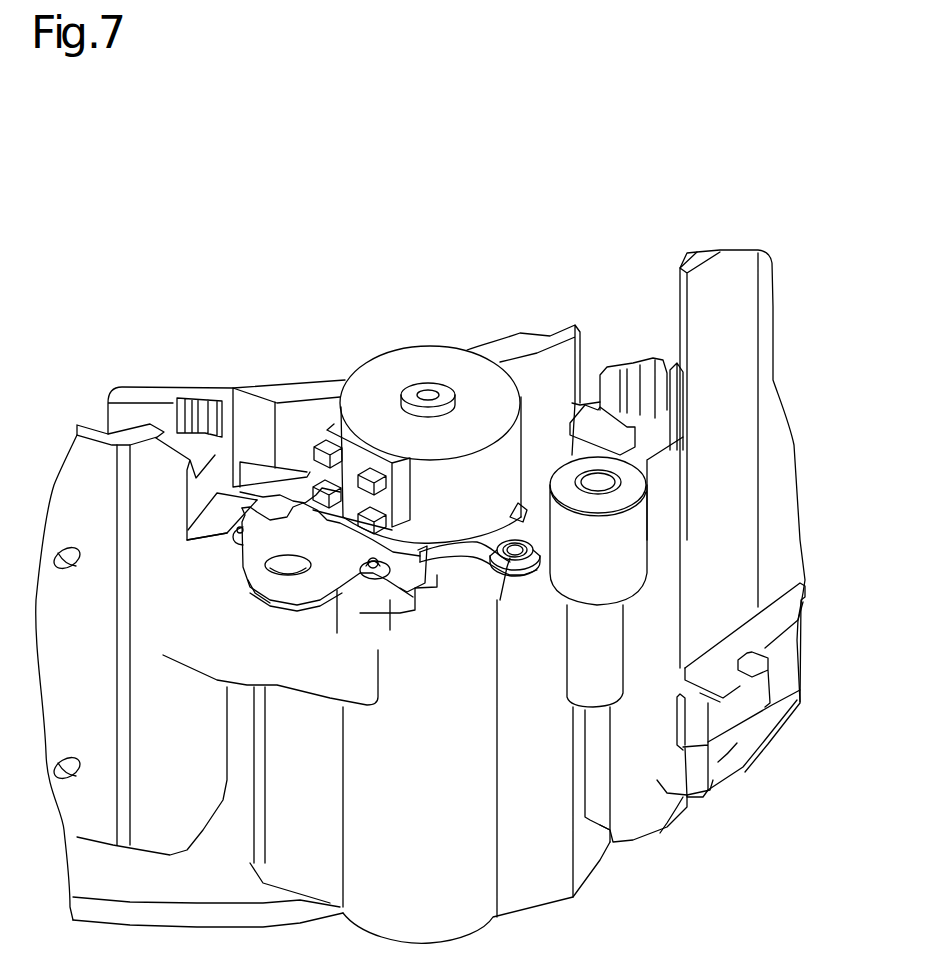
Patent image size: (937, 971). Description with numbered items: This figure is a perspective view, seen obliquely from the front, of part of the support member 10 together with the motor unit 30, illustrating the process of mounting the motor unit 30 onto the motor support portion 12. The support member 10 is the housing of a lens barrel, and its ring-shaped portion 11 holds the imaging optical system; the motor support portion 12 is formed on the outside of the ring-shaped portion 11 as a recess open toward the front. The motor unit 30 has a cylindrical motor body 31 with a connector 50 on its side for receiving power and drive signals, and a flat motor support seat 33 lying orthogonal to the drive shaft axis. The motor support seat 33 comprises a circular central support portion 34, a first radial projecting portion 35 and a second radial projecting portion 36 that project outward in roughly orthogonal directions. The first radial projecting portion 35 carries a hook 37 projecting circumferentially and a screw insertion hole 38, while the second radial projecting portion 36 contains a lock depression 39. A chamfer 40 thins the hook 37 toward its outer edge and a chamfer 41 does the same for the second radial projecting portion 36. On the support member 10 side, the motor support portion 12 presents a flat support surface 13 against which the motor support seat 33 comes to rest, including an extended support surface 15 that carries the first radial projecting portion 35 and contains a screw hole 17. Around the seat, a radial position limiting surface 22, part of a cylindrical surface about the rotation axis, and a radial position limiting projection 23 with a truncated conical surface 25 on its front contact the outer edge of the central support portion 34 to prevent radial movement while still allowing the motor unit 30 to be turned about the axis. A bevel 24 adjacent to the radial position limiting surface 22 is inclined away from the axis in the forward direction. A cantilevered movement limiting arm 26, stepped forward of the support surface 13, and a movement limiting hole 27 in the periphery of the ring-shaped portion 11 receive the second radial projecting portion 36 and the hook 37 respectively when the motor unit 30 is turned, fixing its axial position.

The support member 10 is at (137, 397).
The ring-shaped portion 11 is at (226, 407).
The motor support portion 12 is at (420, 627).
The support surface 13 is at (233, 503).
The extended support surface 15 is at (222, 511).
The screw hole 17 is at (240, 530).
The radial position limiting surface 22 is at (513, 517).
The radial position limiting projection 23 is at (375, 566).
The bevel 24 is at (553, 470).
The truncated conical surface 25 is at (363, 568).
The movement limiting arm 26 is at (460, 570).
The movement limiting hole 27 is at (255, 472).
The motor unit 30 is at (417, 337).
The motor body 31 is at (375, 377).
The motor support seat 33 is at (267, 607).
The central support portion 34 is at (538, 470).
The first radial projecting portion 35 is at (262, 577).
The second radial projecting portion 36 is at (519, 570).
The hook 37 is at (240, 540).
The screw insertion hole 38 is at (288, 563).
The lock depression 39 is at (500, 558).
The chamfer 40 is at (240, 492).
The chamfer 41 is at (528, 565).
The connector 50 is at (317, 440).